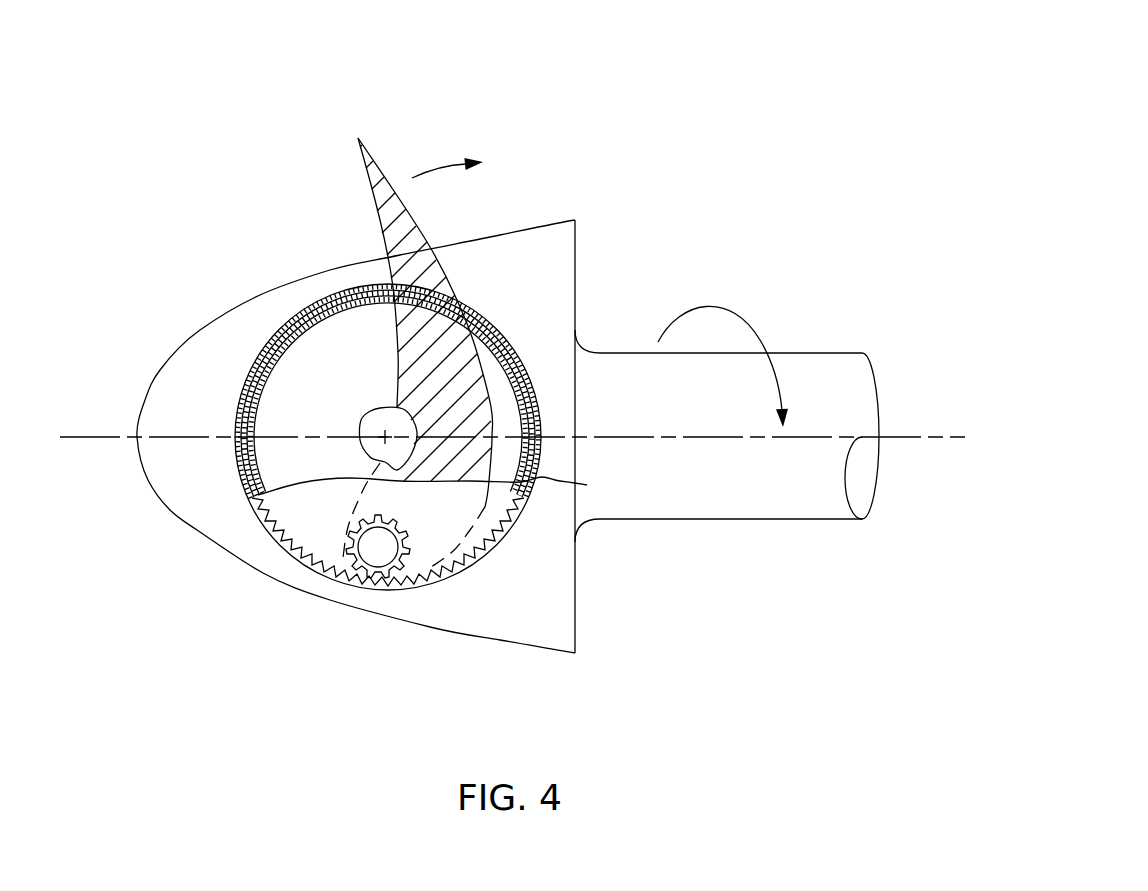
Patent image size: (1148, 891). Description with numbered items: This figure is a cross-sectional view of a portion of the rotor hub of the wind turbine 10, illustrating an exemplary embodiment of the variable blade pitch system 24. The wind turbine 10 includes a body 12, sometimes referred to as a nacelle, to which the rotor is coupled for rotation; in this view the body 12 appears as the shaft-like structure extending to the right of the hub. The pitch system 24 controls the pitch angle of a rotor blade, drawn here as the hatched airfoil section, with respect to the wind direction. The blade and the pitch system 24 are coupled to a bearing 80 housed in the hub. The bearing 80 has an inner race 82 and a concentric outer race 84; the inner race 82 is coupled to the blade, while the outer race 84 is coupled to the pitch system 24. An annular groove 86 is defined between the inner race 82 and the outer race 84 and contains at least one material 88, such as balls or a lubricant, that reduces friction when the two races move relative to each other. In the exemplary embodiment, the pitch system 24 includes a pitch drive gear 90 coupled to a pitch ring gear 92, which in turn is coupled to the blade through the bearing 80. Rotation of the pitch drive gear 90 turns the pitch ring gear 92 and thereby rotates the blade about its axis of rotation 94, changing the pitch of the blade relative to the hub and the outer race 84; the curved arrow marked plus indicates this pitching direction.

The wind turbine 10 is at (715, 68).
The body 12 is at (550, 652).
The variable blade pitch system 24 is at (270, 635).
The bearing 80 is at (495, 292).
The inner race 82 is at (258, 421).
The outer race 84 is at (240, 415).
The annular groove 86 is at (444, 486).
The material 88 is at (257, 357).
The pitch drive gear 90 is at (417, 568).
The pitch ring gear 92 is at (273, 530).
The axis of rotation 94 is at (383, 437).